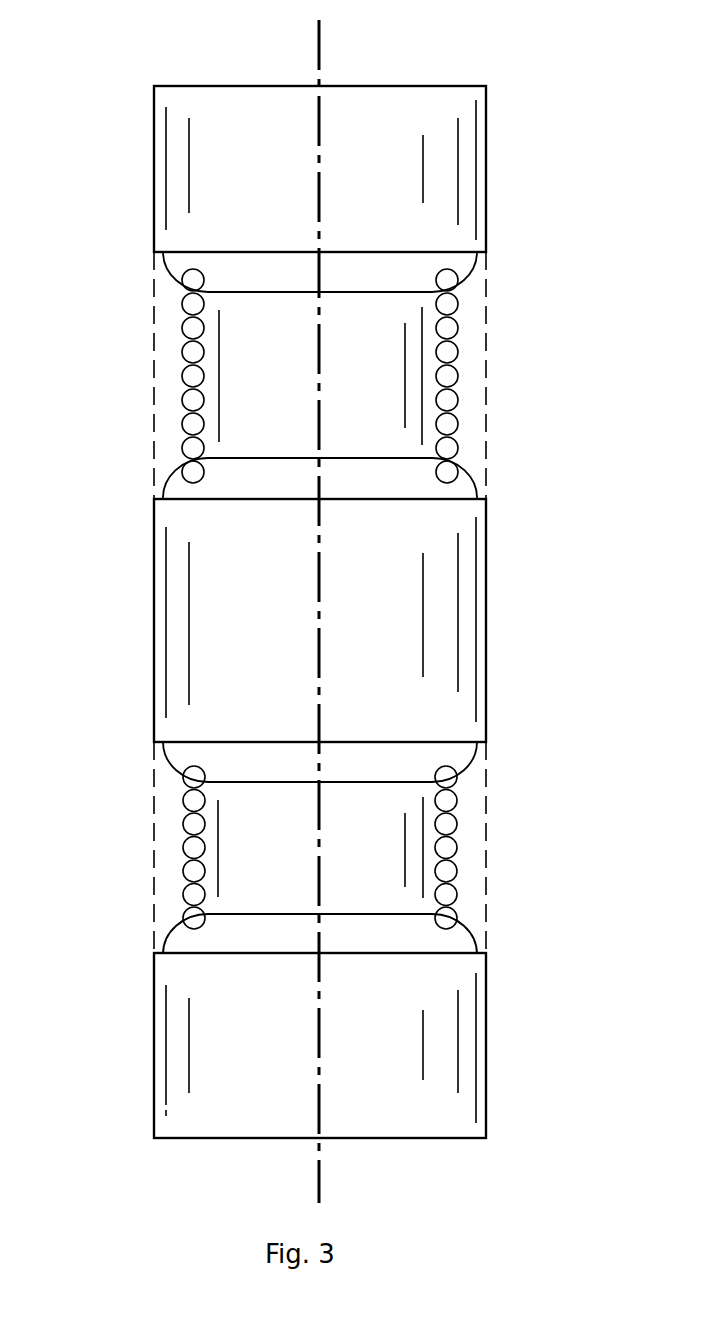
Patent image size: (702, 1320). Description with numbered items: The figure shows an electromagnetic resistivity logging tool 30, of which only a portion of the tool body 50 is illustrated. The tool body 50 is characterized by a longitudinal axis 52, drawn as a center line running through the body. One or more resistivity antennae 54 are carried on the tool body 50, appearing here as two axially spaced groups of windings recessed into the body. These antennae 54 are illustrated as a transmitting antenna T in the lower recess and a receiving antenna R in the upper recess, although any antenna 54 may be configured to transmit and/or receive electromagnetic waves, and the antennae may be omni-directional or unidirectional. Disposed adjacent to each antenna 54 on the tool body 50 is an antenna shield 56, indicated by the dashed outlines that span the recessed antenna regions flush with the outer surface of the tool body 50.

The resistivity logging tool 30 is at (294, 609).
The tool body 50 is at (488, 122).
The longitudinal axis 52 is at (322, 48).
The resistivity antenna 54 is at (457, 398).
The antenna shield 56 is at (153, 322).
The receiving antenna R is at (505, 462).
The transmitting antenna T is at (506, 895).